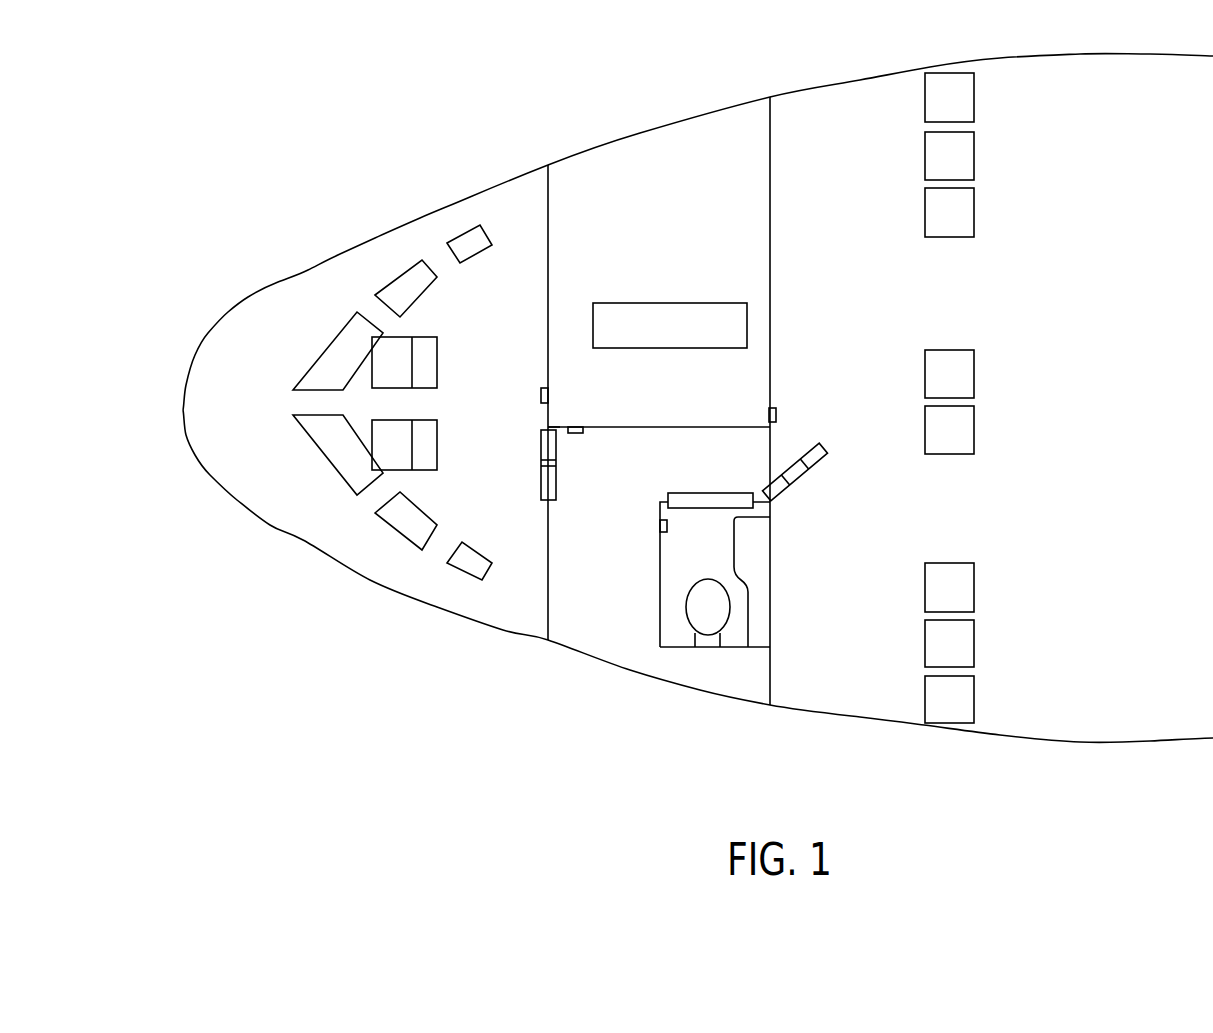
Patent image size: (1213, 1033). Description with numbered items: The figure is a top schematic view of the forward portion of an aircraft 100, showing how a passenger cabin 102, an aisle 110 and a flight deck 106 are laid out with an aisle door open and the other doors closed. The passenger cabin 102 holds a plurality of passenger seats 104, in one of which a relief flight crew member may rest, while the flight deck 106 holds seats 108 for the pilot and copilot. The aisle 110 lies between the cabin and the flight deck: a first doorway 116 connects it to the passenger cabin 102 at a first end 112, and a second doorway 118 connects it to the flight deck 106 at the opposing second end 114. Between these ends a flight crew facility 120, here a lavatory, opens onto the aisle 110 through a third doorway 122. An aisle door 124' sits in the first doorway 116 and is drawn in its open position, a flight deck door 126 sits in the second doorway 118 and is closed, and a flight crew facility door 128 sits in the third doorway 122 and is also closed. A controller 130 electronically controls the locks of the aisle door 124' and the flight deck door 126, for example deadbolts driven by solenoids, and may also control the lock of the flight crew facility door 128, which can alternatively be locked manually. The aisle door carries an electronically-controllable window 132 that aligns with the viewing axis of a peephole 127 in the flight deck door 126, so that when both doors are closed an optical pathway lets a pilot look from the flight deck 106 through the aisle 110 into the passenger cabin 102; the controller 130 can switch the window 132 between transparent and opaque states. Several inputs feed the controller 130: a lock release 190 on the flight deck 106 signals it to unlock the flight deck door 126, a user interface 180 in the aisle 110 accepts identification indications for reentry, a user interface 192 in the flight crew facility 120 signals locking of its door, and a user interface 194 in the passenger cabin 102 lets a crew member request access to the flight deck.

The aircraft 100 is at (285, 177).
The passenger cabin 102 is at (1177, 132).
The passenger seats 104 is at (965, 98).
The flight deck 106 is at (500, 399).
The seats 108 is at (422, 349).
The aisle 110 is at (687, 459).
The first end 112 is at (768, 418).
The second end 114 is at (554, 428).
The first doorway 116 is at (771, 463).
The second doorway 118 is at (557, 464).
The flight crew facility 120 is at (690, 571).
The third doorway 122 is at (704, 490).
The aisle door 124' is at (821, 472).
The flight deck door 126 is at (540, 481).
The peephole 127 is at (553, 462).
The flight crew facility door 128 is at (718, 500).
The controller 130 is at (700, 303).
The electronically-controllable window 132 is at (798, 487).
The user interface 180 is at (578, 438).
The lock release 190 is at (541, 395).
The user interface 192 is at (660, 525).
The user interface 194 is at (777, 412).